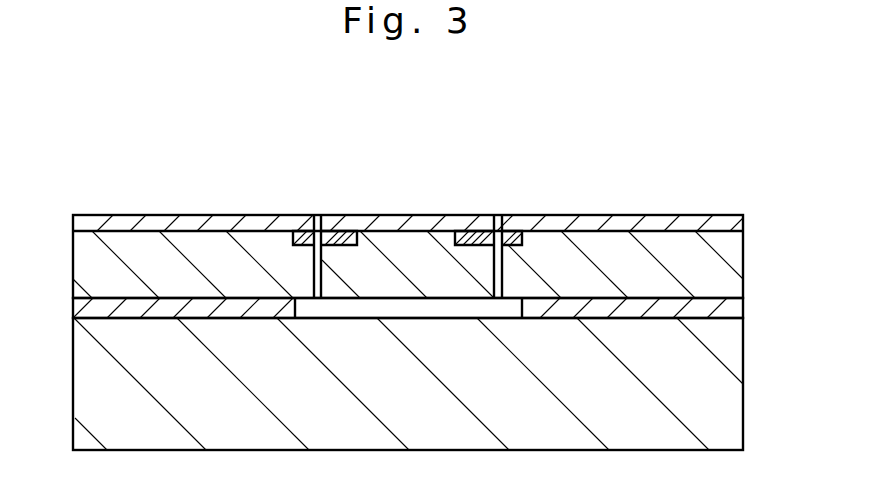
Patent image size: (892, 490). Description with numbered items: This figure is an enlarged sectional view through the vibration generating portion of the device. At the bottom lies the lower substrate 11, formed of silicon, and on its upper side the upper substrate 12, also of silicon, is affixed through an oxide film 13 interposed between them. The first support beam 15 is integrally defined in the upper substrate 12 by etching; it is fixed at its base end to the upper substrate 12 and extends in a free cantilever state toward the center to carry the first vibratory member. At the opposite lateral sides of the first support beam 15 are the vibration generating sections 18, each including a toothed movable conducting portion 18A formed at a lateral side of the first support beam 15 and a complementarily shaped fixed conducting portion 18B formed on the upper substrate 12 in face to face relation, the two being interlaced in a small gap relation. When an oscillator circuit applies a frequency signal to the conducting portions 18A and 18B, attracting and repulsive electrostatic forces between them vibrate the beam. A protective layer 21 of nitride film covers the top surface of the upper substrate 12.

The lower substrate 11 is at (750, 408).
The upper substrate 12 is at (750, 252).
The oxide film 13 is at (732, 310).
The first support beam 15 is at (414, 262).
The vibration generating section 18 is at (421, 192).
The movable conducting portion 18A is at (348, 222).
The fixed conducting portion 18B is at (390, 143).
The protective layer 21 is at (113, 221).